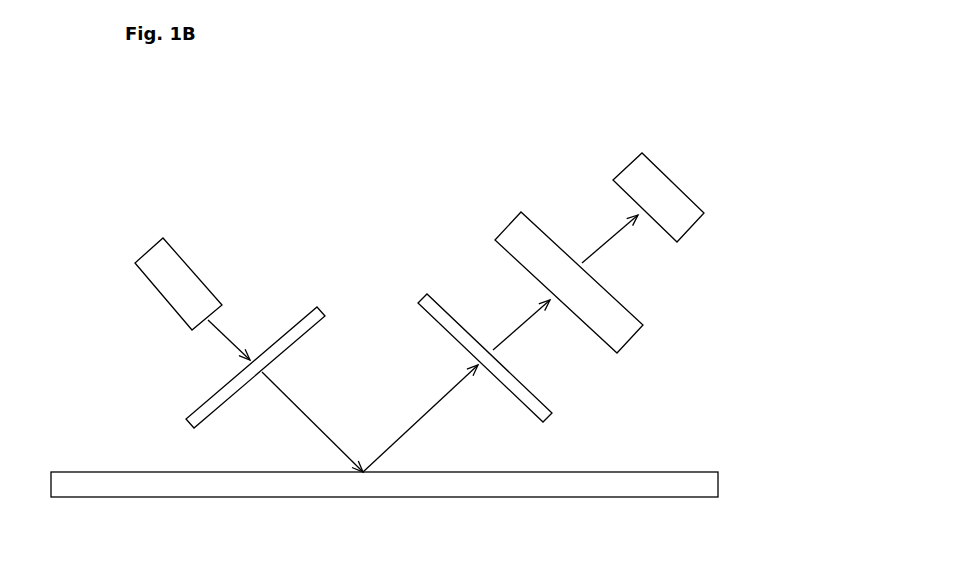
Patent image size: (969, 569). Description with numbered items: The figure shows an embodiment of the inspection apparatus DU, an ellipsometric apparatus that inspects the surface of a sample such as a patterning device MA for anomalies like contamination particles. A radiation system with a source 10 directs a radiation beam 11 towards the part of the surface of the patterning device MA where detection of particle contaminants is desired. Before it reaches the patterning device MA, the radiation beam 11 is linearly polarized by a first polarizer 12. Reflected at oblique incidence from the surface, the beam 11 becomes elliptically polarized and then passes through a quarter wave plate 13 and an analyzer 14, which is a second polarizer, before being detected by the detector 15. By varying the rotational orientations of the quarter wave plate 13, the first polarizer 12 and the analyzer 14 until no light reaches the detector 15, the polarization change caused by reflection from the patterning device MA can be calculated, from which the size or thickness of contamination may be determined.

The inspection apparatus DU is at (267, 177).
The source 10 is at (162, 273).
The radiation beam 11 is at (223, 337).
The first polarizer 12 is at (193, 414).
The quarter wave plate 13 is at (538, 403).
The analyzer 14 is at (620, 318).
The detector 15 is at (677, 212).
The patterning device MA is at (697, 481).